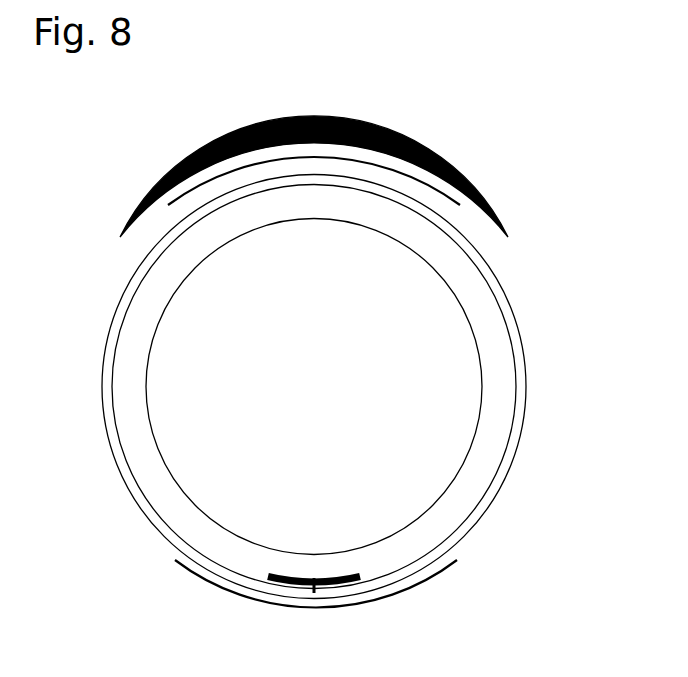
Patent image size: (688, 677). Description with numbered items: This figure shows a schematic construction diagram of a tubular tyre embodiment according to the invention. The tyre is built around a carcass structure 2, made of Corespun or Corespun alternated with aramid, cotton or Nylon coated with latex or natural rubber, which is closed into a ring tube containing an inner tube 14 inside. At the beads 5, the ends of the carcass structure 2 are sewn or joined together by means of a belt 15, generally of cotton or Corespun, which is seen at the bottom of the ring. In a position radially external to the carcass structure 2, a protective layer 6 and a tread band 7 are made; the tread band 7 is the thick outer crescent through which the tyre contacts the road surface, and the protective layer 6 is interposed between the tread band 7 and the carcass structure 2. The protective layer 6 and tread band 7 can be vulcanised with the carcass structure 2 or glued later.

The carcass structure 2 is at (102, 385).
The bead 5 is at (284, 590).
The protective layer 6 is at (183, 194).
The tread band 7 is at (397, 130).
The inner tube 14 is at (483, 375).
The belt 15 is at (388, 598).